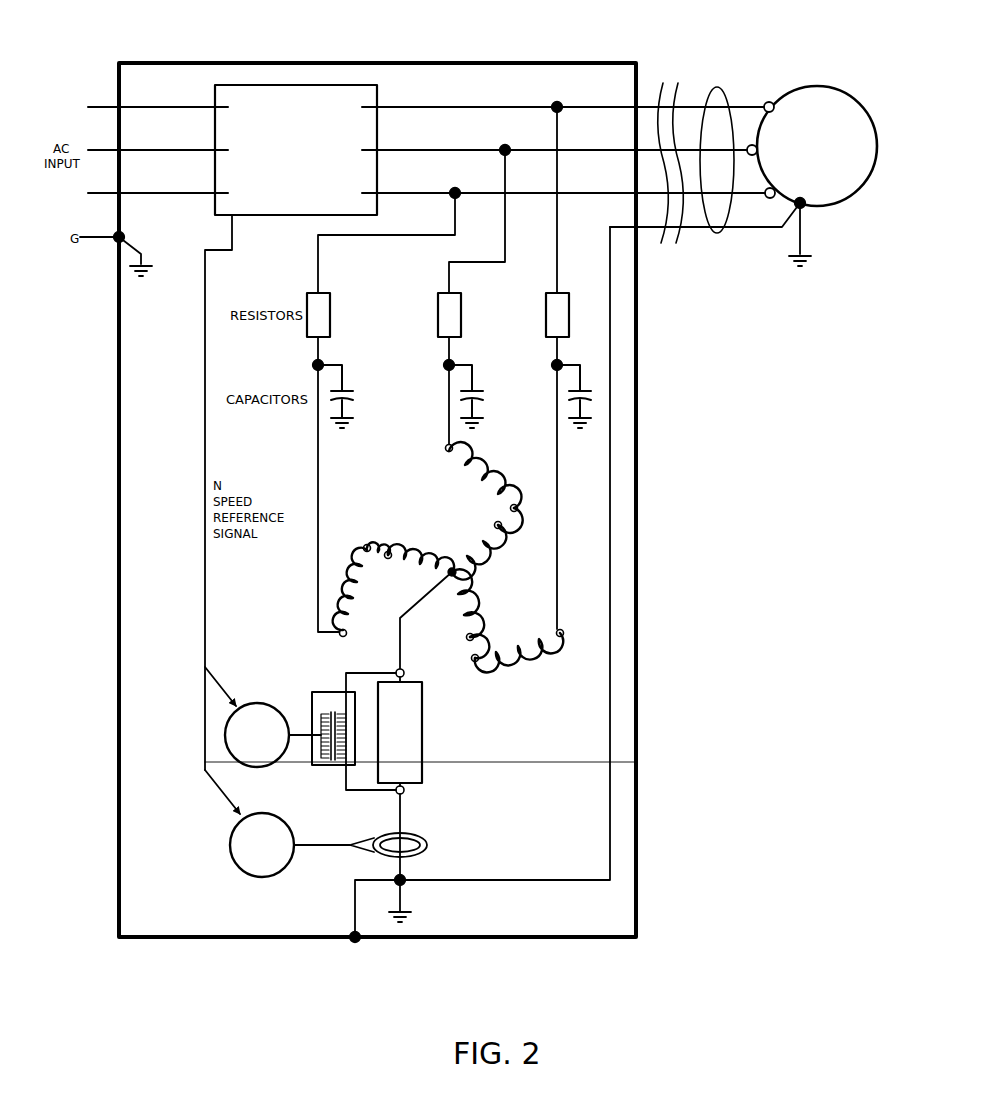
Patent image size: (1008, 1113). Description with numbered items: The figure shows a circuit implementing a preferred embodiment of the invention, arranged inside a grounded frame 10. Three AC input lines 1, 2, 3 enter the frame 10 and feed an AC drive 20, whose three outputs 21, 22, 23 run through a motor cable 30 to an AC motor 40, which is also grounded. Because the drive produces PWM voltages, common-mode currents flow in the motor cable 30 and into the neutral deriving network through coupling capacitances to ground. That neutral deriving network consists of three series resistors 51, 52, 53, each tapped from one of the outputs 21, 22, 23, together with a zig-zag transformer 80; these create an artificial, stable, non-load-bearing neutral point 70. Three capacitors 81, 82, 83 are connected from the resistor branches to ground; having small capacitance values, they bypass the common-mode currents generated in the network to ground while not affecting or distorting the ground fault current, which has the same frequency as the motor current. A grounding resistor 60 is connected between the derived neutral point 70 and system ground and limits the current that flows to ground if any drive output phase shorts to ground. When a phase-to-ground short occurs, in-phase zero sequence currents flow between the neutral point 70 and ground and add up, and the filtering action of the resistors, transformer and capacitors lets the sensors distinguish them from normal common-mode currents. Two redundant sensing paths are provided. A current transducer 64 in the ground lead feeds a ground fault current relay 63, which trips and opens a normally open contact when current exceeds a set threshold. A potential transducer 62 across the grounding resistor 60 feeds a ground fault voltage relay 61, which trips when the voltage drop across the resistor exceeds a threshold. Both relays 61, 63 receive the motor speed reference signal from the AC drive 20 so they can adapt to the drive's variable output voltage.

The AC input line 1 is at (158, 96).
The AC input line 2 is at (158, 139).
The AC input line 3 is at (158, 182).
The frame 10 is at (640, 437).
The AC drive 20 is at (296, 150).
The AC drive output 21 is at (563, 95).
The AC drive output 22 is at (554, 138).
The AC drive output 23 is at (563, 181).
The motor cable 30 is at (717, 87).
The AC motor 40 is at (846, 209).
The series resistor R1 51 is at (331, 289).
The series resistor R2 52 is at (466, 288).
The series resistor R3 53 is at (566, 284).
The grounding resistor RG 60 is at (456, 774).
The ground fault voltage relay GFVR 61 is at (247, 717).
The potential transducer T3 62 is at (314, 792).
The ground fault current relay GFCR 63 is at (249, 823).
The current transducer T2 64 is at (441, 845).
The derived neutral point 70 is at (406, 618).
The transformer T1 80 is at (441, 518).
The capacitor C1 81 is at (358, 410).
The capacitor C2 82 is at (478, 360).
The capacitor C3 83 is at (587, 442).